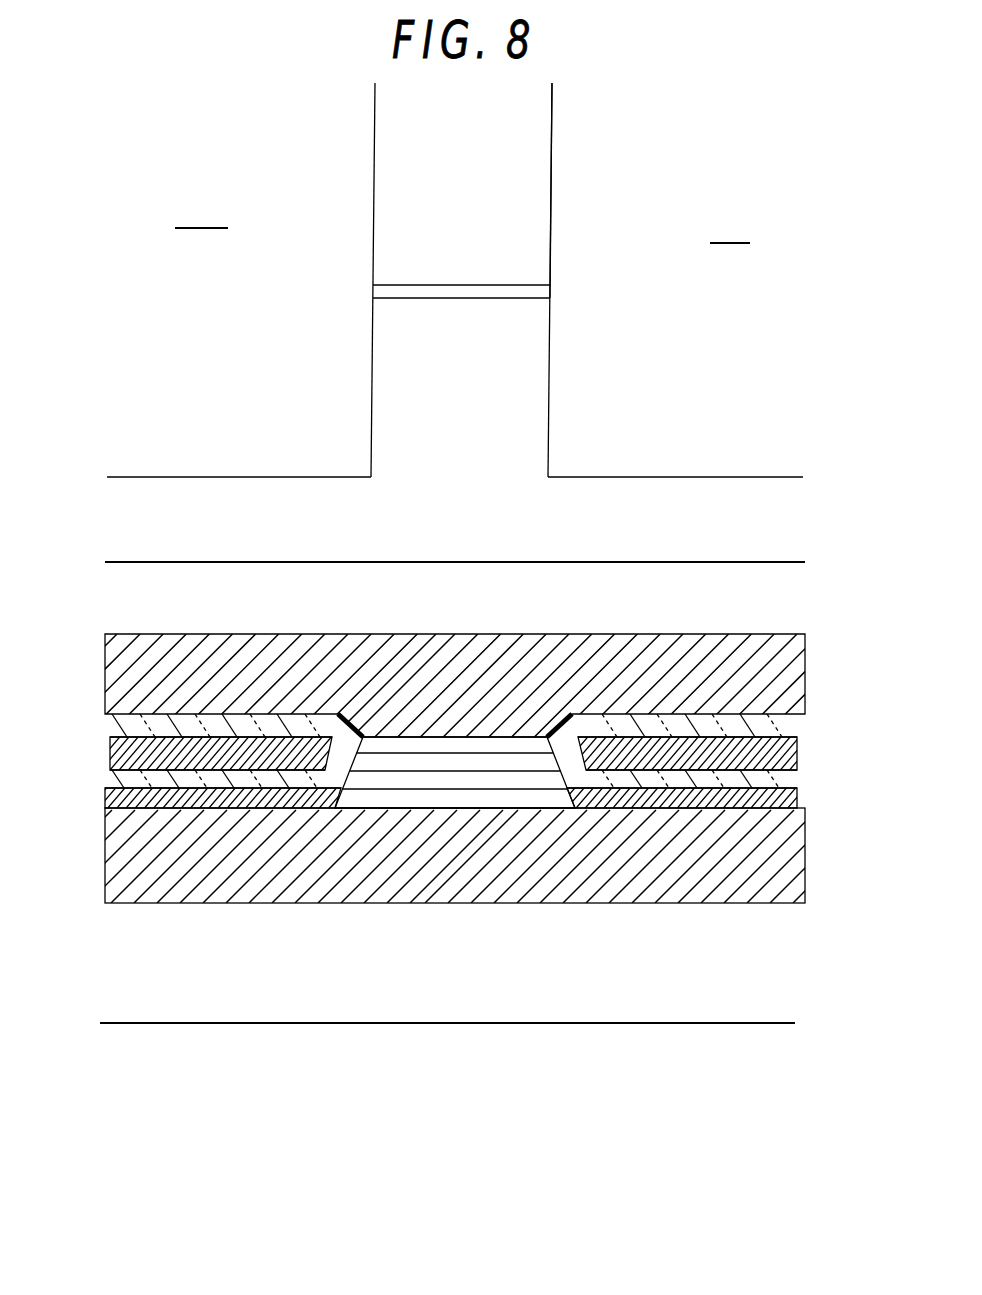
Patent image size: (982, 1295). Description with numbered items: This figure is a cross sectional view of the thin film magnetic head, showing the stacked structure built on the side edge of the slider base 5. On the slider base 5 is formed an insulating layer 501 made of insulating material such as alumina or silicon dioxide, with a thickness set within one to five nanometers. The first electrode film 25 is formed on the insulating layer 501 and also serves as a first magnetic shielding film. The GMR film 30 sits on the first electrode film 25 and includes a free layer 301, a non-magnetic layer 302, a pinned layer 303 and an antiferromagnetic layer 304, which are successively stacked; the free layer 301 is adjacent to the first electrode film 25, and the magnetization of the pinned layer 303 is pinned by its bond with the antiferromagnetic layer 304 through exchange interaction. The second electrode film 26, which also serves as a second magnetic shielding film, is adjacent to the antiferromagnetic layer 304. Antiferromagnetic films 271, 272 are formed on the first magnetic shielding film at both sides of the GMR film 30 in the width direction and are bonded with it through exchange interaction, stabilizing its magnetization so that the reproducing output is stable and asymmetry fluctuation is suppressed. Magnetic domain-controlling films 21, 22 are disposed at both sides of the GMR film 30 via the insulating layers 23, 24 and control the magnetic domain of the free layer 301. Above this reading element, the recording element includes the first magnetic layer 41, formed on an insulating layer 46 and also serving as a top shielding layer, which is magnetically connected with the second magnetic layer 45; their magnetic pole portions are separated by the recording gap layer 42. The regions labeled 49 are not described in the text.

The slider base 5 is at (130, 1123).
The magnetic domain-controlling film 21 is at (168, 770).
The magnetic domain-controlling film 22 is at (753, 765).
The insulating film 23 is at (187, 722).
The insulating film 24 is at (705, 723).
The first electrode film 25 is at (400, 875).
The second electrode film 26 is at (773, 652).
The GMR film 30 is at (372, 723).
The first magnetic layer 41 is at (542, 385).
The recording gap layer 42 is at (537, 291).
The second magnetic layer 45 is at (538, 197).
The insulating layer 46 is at (130, 602).
The region 49 is at (462, 220).
The antiferromagnetic film 271 is at (299, 795).
The antiferromagnetic film 272 is at (697, 795).
The free layer 301 is at (530, 797).
The non-magnetic layer 302 is at (468, 777).
The pinned layer 303 is at (473, 765).
The antiferromagnetic layer 304 is at (412, 743).
The insulating layer 501 is at (135, 945).